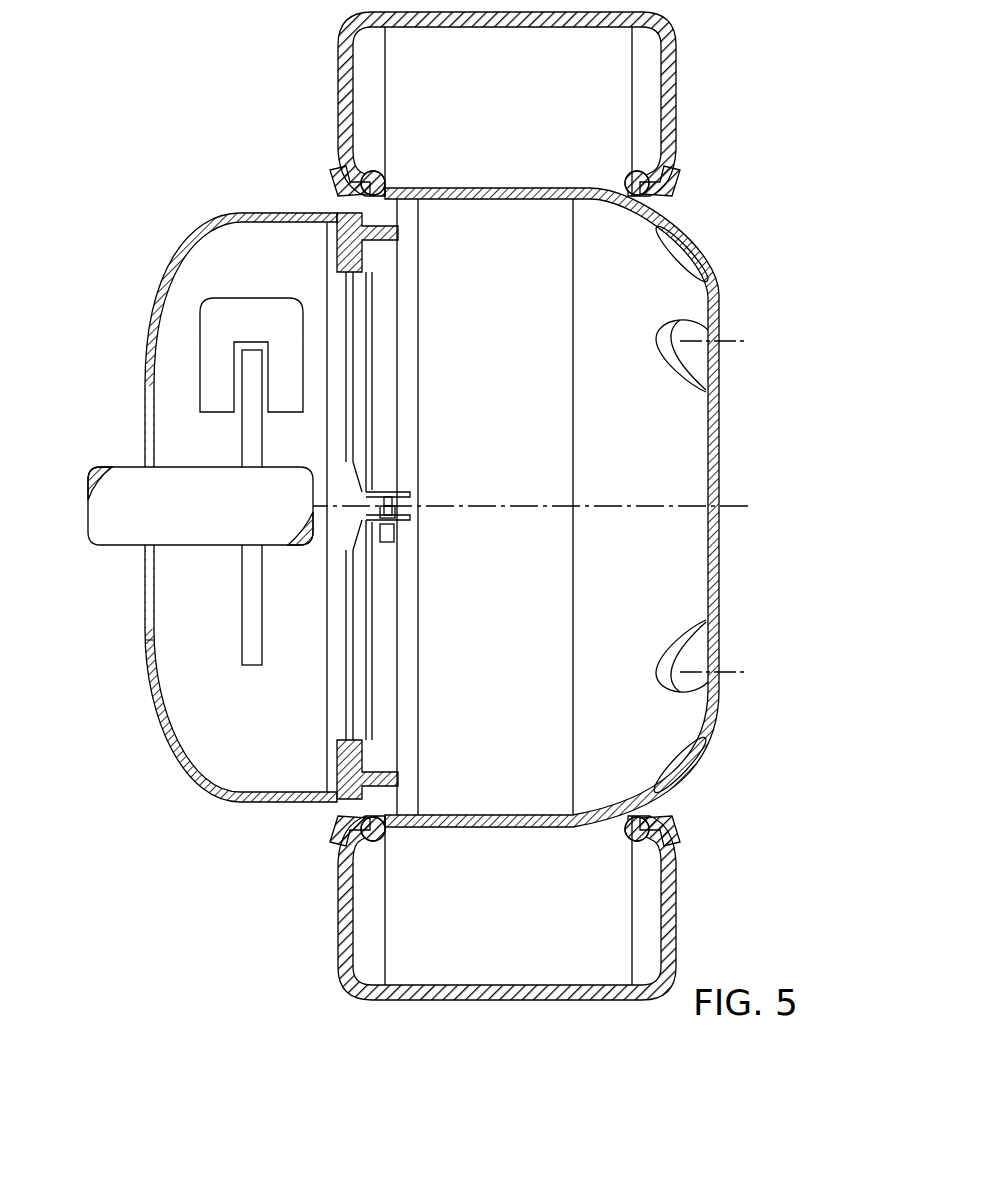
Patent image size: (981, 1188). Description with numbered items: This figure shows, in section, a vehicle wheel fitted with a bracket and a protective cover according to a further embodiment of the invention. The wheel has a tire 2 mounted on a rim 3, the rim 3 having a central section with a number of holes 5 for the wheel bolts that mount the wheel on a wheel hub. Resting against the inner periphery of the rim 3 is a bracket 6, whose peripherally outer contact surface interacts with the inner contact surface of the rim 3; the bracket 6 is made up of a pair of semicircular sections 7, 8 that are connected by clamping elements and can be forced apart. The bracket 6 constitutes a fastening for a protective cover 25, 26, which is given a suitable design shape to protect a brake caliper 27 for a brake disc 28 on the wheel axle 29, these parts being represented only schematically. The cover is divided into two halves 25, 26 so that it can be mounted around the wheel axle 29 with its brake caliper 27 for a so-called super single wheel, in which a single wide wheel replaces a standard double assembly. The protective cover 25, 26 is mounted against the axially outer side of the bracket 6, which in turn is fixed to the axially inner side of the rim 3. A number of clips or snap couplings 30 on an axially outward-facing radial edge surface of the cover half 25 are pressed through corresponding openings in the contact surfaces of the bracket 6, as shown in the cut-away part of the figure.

The tire 2 is at (683, 76).
The rim 3 is at (705, 226).
The holes 5 is at (708, 664).
The bracket 6 is at (385, 441).
The semicircular section 7 is at (360, 320).
The semicircular section 8 is at (360, 692).
The protective cover half 25 is at (150, 328).
The protective cover half 26 is at (155, 692).
The brake caliper 27 is at (215, 312).
The brake disc 28 is at (248, 573).
The wheel axle 29 is at (133, 467).
The clips or snap couplings 30 is at (370, 295).